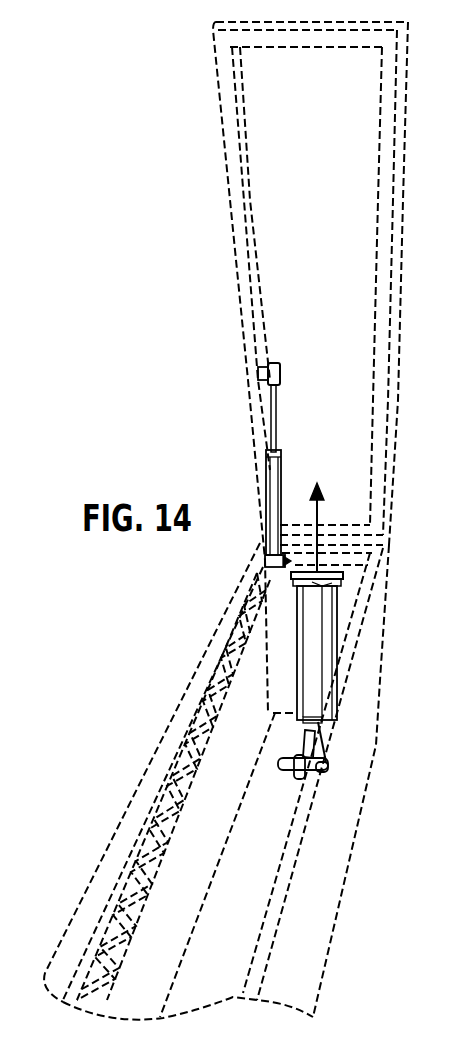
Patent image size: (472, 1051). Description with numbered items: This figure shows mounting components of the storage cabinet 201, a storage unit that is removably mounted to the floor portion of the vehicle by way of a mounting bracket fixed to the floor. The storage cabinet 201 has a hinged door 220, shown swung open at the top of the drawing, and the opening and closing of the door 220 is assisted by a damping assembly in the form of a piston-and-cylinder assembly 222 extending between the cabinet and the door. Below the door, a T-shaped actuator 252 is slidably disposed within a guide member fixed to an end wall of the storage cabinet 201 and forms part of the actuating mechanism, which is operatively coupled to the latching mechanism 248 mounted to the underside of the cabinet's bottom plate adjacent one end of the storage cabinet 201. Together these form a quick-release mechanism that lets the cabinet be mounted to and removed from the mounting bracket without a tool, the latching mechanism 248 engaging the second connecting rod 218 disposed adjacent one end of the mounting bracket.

The storage cabinet 201 is at (160, 333).
The hinged door 220 is at (233, 248).
The piston-and-cylinder assembly 222 is at (272, 488).
The T-shaped actuator 252 is at (307, 573).
The latching mechanism 248 is at (290, 748).
The second connecting rod 218 is at (320, 762).